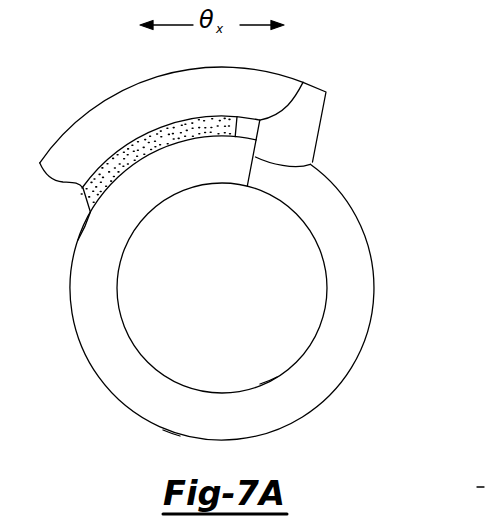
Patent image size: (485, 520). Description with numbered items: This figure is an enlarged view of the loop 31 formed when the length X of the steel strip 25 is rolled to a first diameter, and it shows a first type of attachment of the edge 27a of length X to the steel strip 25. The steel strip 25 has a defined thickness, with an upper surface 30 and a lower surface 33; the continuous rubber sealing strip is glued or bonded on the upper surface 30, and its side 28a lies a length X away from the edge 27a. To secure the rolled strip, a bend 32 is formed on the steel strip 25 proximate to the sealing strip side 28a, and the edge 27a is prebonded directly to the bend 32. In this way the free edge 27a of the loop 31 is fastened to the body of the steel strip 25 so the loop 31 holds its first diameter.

The steel strip 25 is at (332, 347).
The edge 27a is at (311, 163).
The side of the sealing strip 28a is at (300, 84).
The upper surface 30 is at (277, 377).
The loop 31 is at (100, 253).
The bend 32 is at (303, 115).
The lower surface 33 is at (163, 430).